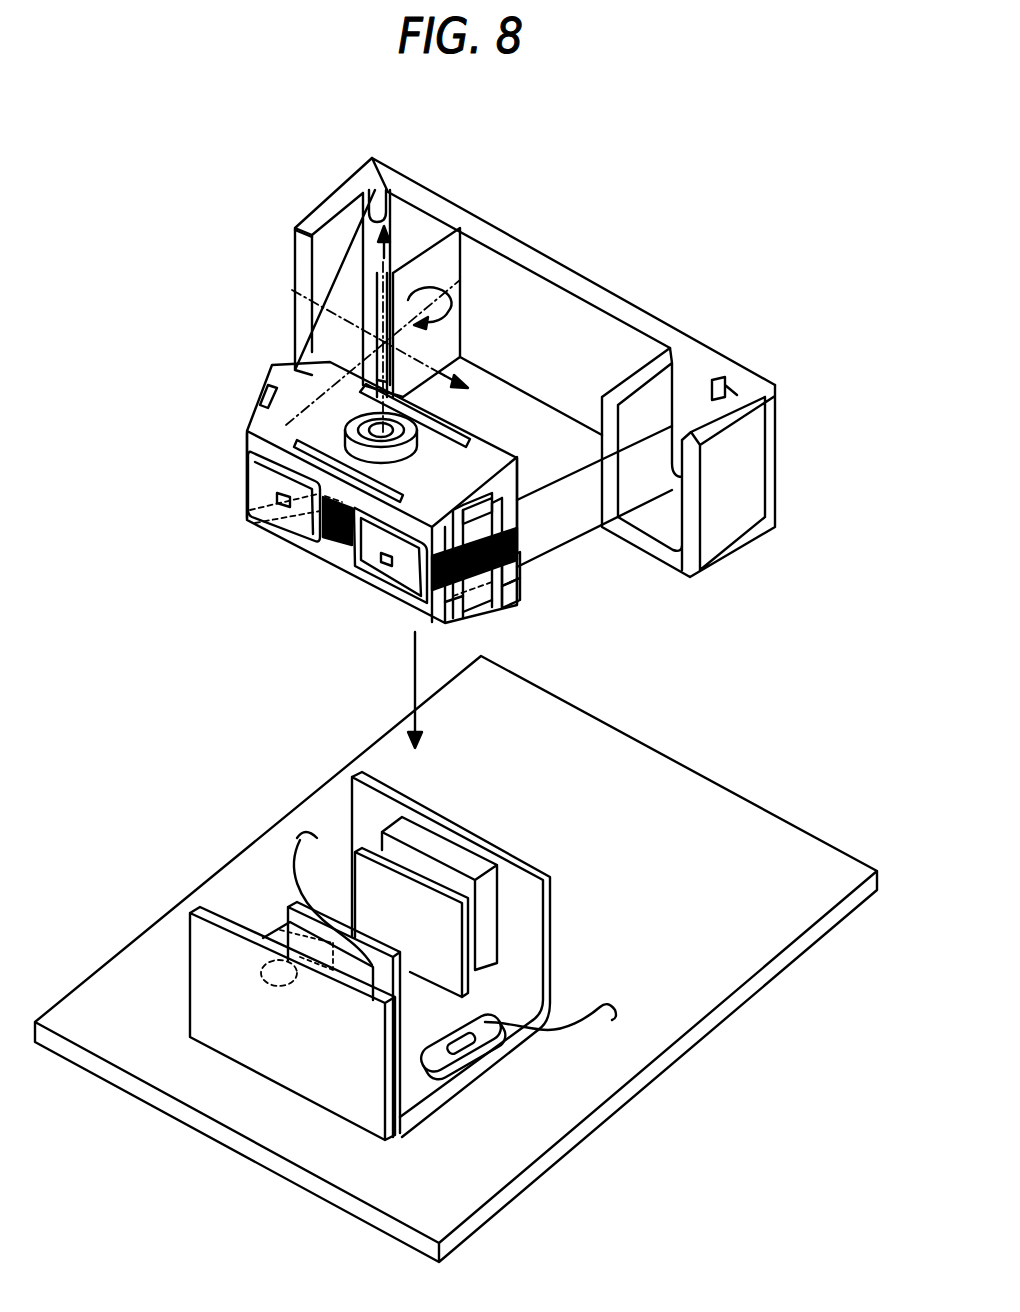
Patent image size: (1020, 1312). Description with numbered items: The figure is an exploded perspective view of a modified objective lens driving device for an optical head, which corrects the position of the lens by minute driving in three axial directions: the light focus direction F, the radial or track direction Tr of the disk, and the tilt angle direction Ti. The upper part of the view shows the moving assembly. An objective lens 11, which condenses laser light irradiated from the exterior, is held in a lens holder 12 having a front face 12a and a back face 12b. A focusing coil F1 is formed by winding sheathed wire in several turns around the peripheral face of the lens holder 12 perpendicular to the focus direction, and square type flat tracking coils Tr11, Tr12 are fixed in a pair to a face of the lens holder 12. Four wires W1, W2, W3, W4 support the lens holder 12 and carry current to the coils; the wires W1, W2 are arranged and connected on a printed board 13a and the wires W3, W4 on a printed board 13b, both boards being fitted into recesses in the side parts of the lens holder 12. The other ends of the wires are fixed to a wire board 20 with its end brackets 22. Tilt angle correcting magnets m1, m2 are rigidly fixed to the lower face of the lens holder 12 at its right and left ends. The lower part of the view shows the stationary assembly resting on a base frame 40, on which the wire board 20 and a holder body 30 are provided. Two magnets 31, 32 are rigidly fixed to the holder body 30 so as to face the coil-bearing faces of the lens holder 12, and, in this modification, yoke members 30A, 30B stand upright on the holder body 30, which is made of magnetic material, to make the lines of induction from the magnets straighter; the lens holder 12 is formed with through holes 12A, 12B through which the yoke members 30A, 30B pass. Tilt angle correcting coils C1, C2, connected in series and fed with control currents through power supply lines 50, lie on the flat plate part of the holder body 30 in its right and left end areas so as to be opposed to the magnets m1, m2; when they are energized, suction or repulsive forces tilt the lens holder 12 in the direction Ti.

The wire board 20 is at (495, 227).
The bracket 22 is at (305, 222).
The lens holder 12 is at (243, 425).
The front face 12a is at (243, 439).
The back face 12b is at (520, 450).
The through hole 12A is at (462, 425).
The through hole 12B is at (355, 565).
The printed board 13a is at (472, 508).
The printed board 13b is at (262, 390).
The objective lens 11 is at (400, 425).
The light focus direction F is at (391, 327).
The tilt angle direction Ti is at (373, 341).
The radial direction Tr is at (392, 346).
The wire W1 is at (552, 472).
The wire W2 is at (545, 555).
The wire W3 is at (338, 290).
The wire W4 is at (360, 375).
The tracking coil Tr11 is at (263, 510).
The tracking coil Tr12 is at (402, 587).
The focusing coil F1 is at (322, 540).
The tilt angle correcting magnet m1 is at (475, 615).
The tilt angle correcting magnet m2 is at (248, 518).
The base frame 40 is at (783, 838).
The holder body 30 is at (550, 900).
The yoke member 30A is at (467, 950).
The yoke member 30B is at (396, 965).
The magnet 32 is at (455, 850).
The magnet 31 is at (360, 972).
The tilt angle correcting coil C1 is at (450, 1060).
The tilt angle correcting coil C2 is at (280, 922).
The power supply line 50 is at (298, 838).